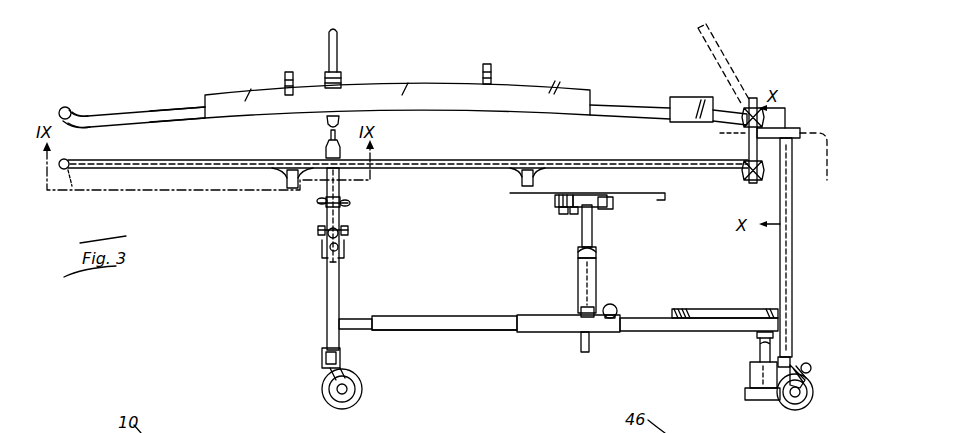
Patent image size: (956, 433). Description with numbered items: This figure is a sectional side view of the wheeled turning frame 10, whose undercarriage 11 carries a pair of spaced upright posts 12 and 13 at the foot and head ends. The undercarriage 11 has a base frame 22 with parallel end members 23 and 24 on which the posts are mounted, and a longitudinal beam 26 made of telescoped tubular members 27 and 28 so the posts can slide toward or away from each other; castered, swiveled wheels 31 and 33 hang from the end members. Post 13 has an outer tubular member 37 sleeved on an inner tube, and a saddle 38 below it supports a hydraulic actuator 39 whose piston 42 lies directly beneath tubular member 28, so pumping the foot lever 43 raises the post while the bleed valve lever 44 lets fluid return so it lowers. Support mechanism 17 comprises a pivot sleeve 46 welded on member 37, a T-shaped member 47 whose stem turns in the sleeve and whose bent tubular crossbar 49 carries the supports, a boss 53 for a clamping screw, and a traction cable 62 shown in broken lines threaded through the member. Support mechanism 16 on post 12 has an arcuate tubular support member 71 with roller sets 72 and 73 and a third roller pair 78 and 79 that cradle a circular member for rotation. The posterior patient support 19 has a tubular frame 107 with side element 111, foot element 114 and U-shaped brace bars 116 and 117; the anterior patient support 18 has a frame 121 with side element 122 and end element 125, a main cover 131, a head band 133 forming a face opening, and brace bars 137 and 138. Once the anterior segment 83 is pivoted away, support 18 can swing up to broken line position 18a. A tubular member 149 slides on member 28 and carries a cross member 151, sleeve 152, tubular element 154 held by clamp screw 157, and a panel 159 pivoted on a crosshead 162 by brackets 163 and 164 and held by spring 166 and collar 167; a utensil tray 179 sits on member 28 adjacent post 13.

The turning frame 10 is at (235, 46).
The undercarriage 11 is at (312, 327).
The post 12 is at (323, 294).
The post 13 is at (796, 237).
The support mechanism 16 is at (326, 42).
The support mechanism 17 is at (760, 93).
The anterior patient support 18 is at (126, 110).
The broken line position of anterior patient support 18a is at (716, 42).
The posterior patient support 19 is at (454, 191).
The base frame 22 is at (454, 314).
The end member 23 is at (322, 357).
The end member 24 is at (790, 358).
The longitudinal beam 26 is at (414, 332).
The tubular member 27 is at (353, 318).
The tubular member 28 is at (397, 316).
The wheel 31 is at (361, 397).
The wheel 33 is at (790, 416).
The outer tubular member 37 is at (786, 263).
The saddle 38 is at (748, 396).
The actuator 39 is at (752, 376).
The piston 42 is at (756, 335).
The foot lever 43 is at (809, 364).
The bleed valve lever 44 is at (812, 405).
The pivot sleeve 46 is at (776, 128).
The T-shaped member 47 is at (745, 149).
The crossbar 49 is at (752, 185).
The boss 53 is at (735, 432).
The traction cable 62 is at (823, 180).
The support member 71 is at (339, 268).
The roller set 72 is at (349, 205).
The roller set 73 is at (318, 203).
The roller 78 is at (349, 231).
The roller 79 is at (320, 233).
The anterior segment 83 is at (238, 432).
The frame 107 is at (74, 188).
The side element 111 is at (148, 160).
The foot element 114 is at (66, 156).
The brace bar 116 is at (513, 193).
The brace bar 117 is at (283, 185).
The frame 121 is at (179, 107).
The side element 122 is at (86, 116).
The end element 125 is at (64, 107).
The main cover 131 is at (378, 85).
The head band 133 is at (683, 96).
The brace bar 137 is at (491, 64).
The brace bar 138 is at (289, 70).
The tubular member 149 is at (533, 332).
The cross member 151 is at (579, 313).
The sleeve 152 is at (599, 279).
The tubular element 154 is at (594, 231).
The clamp screw 157 is at (598, 256).
The panel 159 is at (666, 199).
The crosshead 162 is at (592, 196).
The bracket 163 is at (572, 214).
The bracket 164 is at (609, 208).
The spring 166 is at (565, 214).
The collar 167 is at (552, 196).
The utensil tray 179 is at (726, 288).